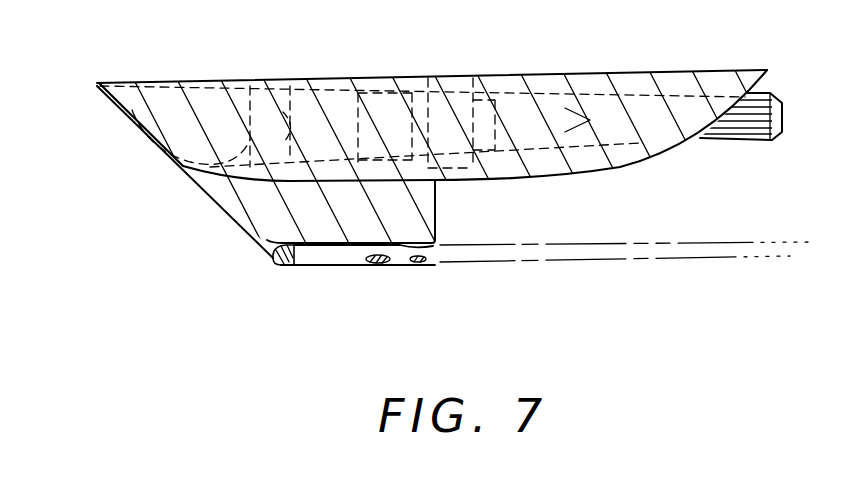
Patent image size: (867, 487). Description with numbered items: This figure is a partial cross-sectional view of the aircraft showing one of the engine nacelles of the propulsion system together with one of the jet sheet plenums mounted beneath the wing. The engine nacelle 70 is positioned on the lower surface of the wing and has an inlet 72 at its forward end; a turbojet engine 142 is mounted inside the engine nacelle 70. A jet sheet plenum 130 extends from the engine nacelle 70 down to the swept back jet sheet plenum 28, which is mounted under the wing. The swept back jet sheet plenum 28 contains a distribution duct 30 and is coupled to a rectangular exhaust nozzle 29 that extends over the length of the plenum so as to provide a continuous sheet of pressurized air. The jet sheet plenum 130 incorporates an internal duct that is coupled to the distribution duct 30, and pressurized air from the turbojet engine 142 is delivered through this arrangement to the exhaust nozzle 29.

The turbojet engine 142 is at (450, 78).
The inlet 72 is at (163, 148).
The engine nacelle 70 is at (248, 180).
The jet sheet plenum 130 is at (247, 233).
The swept back jet sheet plenum 28 is at (282, 267).
The distribution duct 30 is at (348, 258).
The exhaust nozzle 29 is at (442, 250).